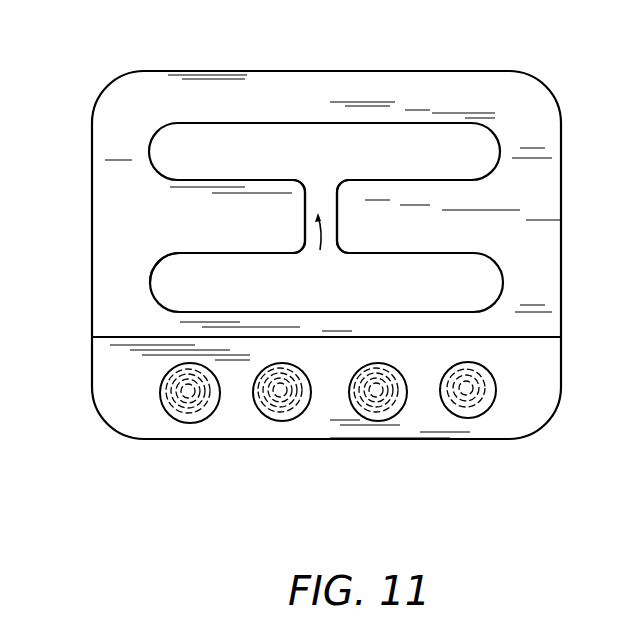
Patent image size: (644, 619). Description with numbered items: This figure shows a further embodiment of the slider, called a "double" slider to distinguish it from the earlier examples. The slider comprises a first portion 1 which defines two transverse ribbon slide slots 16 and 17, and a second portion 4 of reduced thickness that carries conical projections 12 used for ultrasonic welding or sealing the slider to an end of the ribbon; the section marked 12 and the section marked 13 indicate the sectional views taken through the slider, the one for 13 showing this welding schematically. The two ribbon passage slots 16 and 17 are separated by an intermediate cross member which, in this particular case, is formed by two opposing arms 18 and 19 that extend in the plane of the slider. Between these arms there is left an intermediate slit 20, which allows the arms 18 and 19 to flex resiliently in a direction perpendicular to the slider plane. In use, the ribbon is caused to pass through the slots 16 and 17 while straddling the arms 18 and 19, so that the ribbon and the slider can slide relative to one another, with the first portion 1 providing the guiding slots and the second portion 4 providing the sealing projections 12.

The first portion 1 is at (548, 114).
The second portion 4 is at (553, 398).
The conical projections 12 is at (270, 403).
The section line 13- 13 is at (340, 44).
The ribbon slide slot 16 is at (180, 138).
The ribbon slide slot 17 is at (154, 281).
The arm 18 is at (276, 189).
The arm 19 is at (348, 191).
The intermediate slit 20 is at (312, 249).